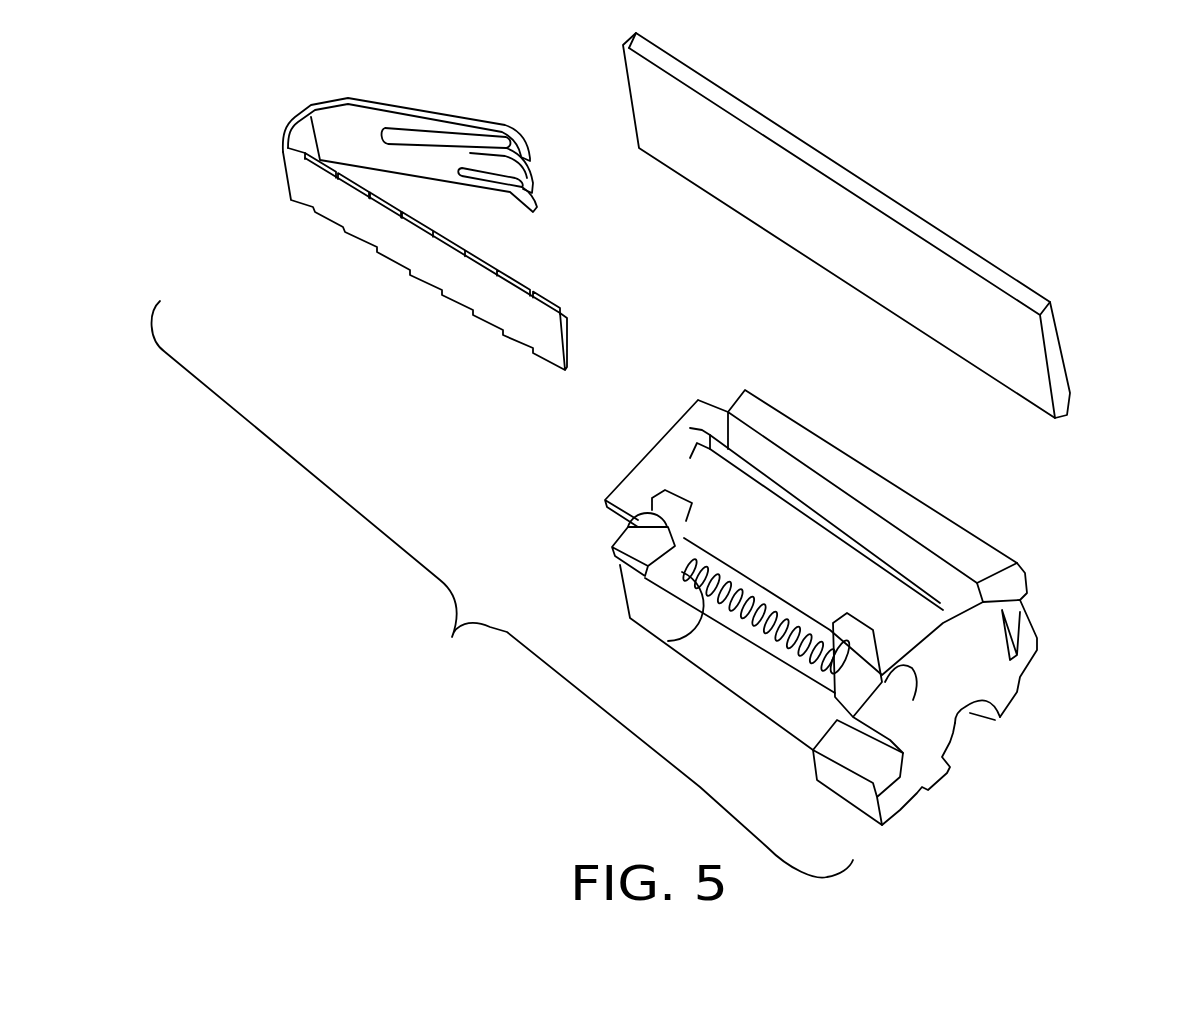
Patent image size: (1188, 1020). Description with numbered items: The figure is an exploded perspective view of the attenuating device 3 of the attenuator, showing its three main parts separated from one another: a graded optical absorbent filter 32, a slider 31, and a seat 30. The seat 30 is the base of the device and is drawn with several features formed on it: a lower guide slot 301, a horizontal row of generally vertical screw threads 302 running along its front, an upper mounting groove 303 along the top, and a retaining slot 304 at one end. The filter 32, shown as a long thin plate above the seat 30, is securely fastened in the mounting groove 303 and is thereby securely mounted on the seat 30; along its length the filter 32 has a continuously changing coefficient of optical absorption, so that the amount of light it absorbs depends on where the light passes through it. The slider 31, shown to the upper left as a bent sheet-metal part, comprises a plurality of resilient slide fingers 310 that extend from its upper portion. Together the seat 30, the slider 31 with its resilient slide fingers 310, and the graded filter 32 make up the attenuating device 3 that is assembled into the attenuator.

The attenuating device 3 is at (1175, 181).
The seat 30 is at (851, 584).
The lower guide slot 301 is at (957, 730).
The screw threads 302 is at (672, 636).
The upper mounting groove 303 is at (730, 402).
The retaining slot 304 is at (1003, 608).
The slider 31 is at (392, 243).
The resilient slide fingers 310 is at (525, 135).
The graded optical absorbent filter 32 is at (858, 222).